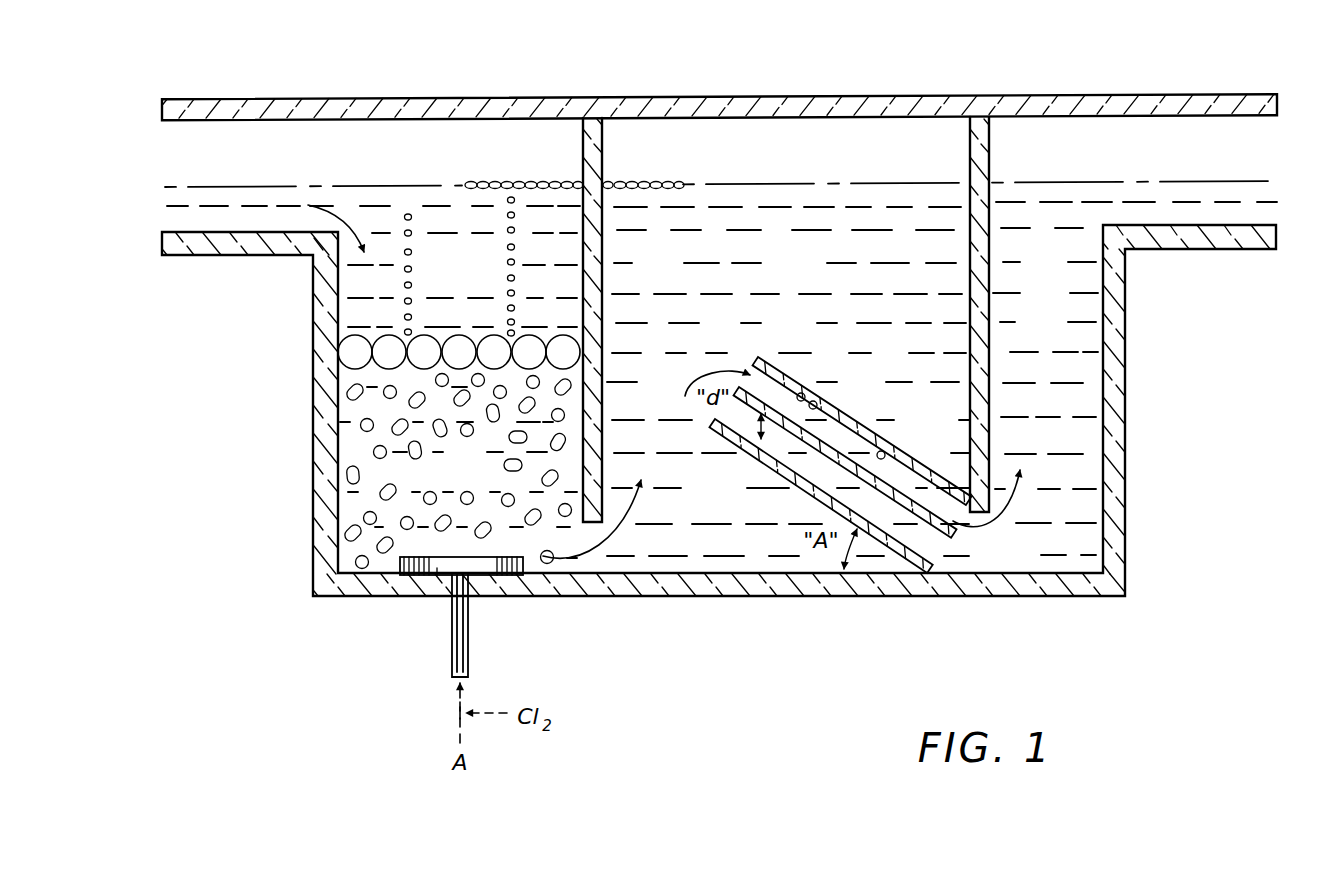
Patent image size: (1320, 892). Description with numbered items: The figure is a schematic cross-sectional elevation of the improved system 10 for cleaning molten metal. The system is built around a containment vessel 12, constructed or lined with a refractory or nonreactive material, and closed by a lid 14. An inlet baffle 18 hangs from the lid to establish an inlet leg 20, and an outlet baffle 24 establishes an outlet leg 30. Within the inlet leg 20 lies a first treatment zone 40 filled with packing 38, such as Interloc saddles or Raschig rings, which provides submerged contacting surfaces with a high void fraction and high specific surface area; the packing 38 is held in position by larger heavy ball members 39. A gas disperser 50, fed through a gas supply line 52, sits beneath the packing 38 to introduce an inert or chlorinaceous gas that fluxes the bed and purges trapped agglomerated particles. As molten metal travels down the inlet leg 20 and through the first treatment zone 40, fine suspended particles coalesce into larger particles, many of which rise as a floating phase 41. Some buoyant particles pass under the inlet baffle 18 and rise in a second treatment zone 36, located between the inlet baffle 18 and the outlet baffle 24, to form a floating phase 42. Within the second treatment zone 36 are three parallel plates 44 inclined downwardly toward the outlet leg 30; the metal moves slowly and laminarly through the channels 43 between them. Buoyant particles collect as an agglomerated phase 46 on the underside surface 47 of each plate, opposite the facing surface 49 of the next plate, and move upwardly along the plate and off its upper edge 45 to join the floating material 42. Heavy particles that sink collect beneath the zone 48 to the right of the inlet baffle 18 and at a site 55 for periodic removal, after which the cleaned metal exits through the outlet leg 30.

The improved system 10 is at (1212, 433).
The containment vessel 12 is at (1128, 331).
The lid 14 is at (1118, 93).
The inlet baffle 18 is at (603, 253).
The inlet leg 20 is at (474, 270).
The outlet baffle 24 is at (990, 252).
The outlet leg 30 is at (1030, 320).
The second treatment zone 36 is at (775, 268).
The packing 38 is at (413, 458).
The ball members 39 is at (350, 352).
The first treatment zone 40 is at (445, 476).
The floating phase 41 is at (487, 183).
The floating phase 42 is at (651, 183).
The channels 43 is at (777, 395).
The parallel plates 44 is at (840, 437).
The upper edge 45 is at (759, 358).
The agglomerated phase 46 is at (803, 392).
The underside surface 47 is at (887, 452).
The zone 48 is at (692, 505).
The opposed surface 49 is at (900, 490).
The gas disperser 50 is at (432, 578).
The gas supply line 52 is at (470, 648).
The site 55 is at (1000, 558).